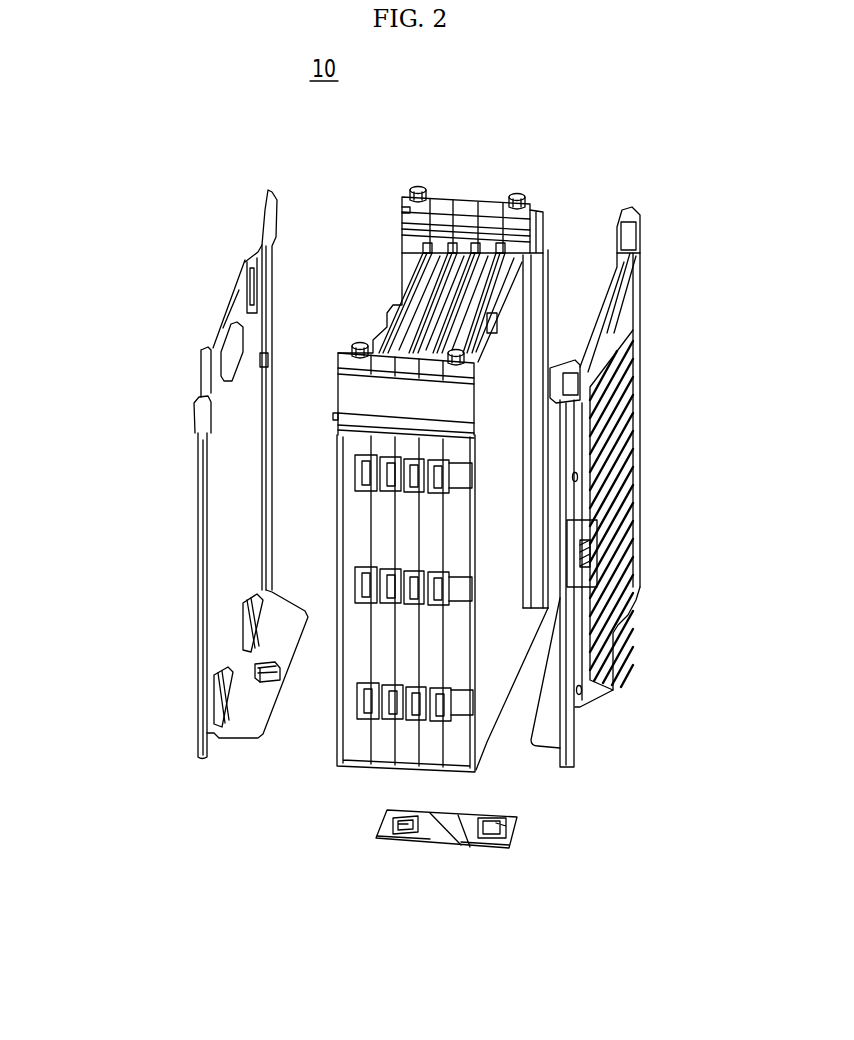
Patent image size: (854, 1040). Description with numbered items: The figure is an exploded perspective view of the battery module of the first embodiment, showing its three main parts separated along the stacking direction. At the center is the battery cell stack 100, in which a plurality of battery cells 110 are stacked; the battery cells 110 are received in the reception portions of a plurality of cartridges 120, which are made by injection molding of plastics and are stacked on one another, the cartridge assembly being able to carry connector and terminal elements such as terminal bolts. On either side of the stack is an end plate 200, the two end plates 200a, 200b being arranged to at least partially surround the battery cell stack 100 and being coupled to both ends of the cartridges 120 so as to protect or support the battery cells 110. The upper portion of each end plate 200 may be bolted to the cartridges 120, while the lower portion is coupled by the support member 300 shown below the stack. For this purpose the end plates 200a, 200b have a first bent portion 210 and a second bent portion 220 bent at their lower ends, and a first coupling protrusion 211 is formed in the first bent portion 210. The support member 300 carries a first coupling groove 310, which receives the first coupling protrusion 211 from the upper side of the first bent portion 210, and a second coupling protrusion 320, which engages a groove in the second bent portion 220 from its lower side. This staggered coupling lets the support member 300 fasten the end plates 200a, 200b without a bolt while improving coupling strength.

The battery cell stack 100 is at (513, 155).
The battery cell 110 is at (513, 357).
The cartridge 120 is at (468, 198).
The end plate 200 is at (152, 305).
The end plate 200a is at (197, 484).
The end plate 200b is at (580, 463).
The first bent portion 210 is at (240, 738).
The first coupling protrusion 211 is at (280, 672).
The second bent portion 220 is at (545, 742).
The support member 300 is at (532, 833).
The first coupling groove 310 is at (406, 828).
The second coupling protrusion 320 is at (488, 838).